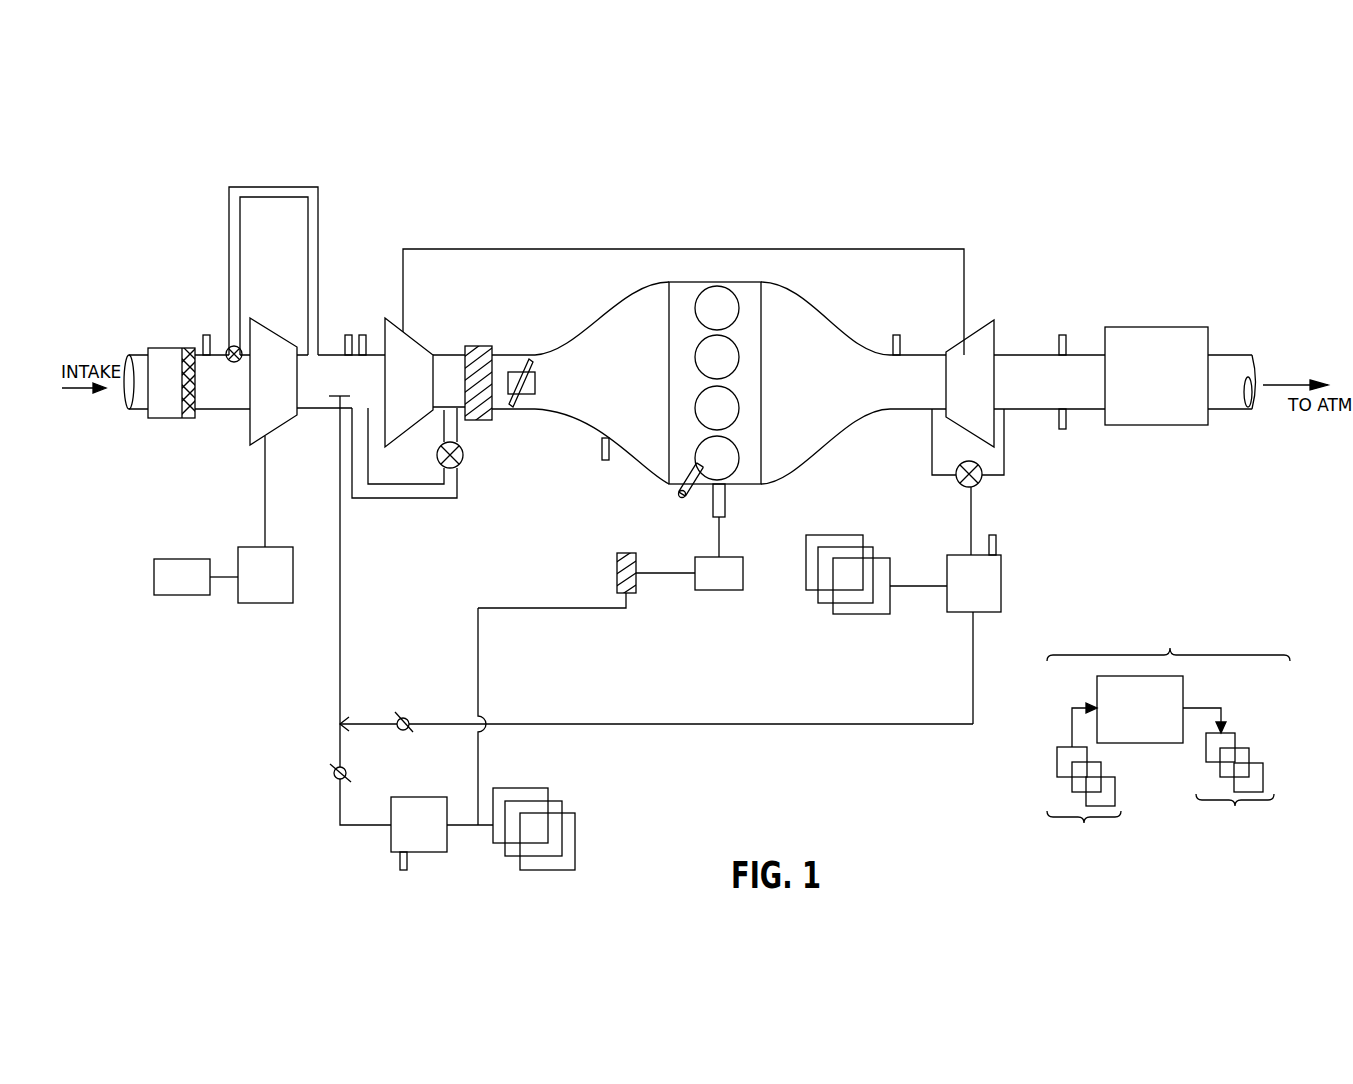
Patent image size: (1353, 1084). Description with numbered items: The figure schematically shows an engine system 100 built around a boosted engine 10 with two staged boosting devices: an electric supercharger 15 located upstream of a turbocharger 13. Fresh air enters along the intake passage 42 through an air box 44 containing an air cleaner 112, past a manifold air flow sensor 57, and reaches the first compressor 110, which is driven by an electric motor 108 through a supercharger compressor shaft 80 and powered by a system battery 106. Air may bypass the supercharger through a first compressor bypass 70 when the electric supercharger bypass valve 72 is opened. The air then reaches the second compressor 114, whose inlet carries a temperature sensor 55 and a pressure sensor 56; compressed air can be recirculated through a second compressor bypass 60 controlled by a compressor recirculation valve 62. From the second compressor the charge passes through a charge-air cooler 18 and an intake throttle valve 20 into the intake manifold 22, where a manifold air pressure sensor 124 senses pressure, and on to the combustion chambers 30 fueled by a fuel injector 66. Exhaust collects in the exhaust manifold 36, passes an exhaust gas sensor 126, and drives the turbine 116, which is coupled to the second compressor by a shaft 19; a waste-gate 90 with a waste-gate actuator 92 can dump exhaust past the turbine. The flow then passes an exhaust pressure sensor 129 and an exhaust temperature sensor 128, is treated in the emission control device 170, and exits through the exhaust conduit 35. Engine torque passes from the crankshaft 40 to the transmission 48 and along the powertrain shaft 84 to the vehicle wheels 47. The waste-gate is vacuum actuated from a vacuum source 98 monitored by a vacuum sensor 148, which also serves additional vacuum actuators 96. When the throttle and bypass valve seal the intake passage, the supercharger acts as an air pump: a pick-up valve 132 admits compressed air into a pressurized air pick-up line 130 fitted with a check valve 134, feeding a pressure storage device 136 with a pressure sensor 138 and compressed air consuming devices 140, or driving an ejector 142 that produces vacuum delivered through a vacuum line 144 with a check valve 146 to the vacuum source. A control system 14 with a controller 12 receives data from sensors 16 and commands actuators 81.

The engine system 100 is at (1236, 129).
The engine 10 is at (763, 366).
The controller 12 is at (1149, 711).
The turbocharger 13 is at (462, 236).
The control system 14 is at (1168, 635).
The electric supercharger 15 is at (183, 510).
The sensors 16 is at (1084, 807).
The charge-air cooler 18 is at (485, 346).
The shaft 19 is at (867, 250).
The intake throttle valve 20 is at (535, 393).
The intake manifold 22 is at (602, 383).
The combustion chambers 30 is at (739, 302).
The exhaust conduit 35 is at (1232, 355).
The exhaust manifold 36 is at (853, 383).
The crankshaft 40 is at (726, 512).
The intake passage 42 is at (137, 412).
The air box 44 is at (160, 419).
The vehicle wheels 47 is at (617, 563).
The transmission 48 is at (719, 573).
The temperature sensor 55 is at (349, 335).
The pressure sensor 56 is at (362, 335).
The manifold air flow sensor 57 is at (206, 336).
The second compressor bypass 60 is at (418, 484).
The compressor recirculation valve 62 is at (463, 458).
The fuel injector 66 is at (683, 495).
The first compressor bypass 70 is at (229, 230).
The electric supercharger bypass valve 72 is at (231, 346).
The supercharger compressor shaft 80 is at (265, 477).
The actuators 81 is at (1235, 793).
The powertrain shaft 84 is at (648, 575).
The waste-gate 90 is at (932, 464).
The waste-gate actuator 92 is at (965, 487).
The vacuum actuators 96 is at (876, 574).
The vacuum source 98 is at (974, 639).
The system battery 106 is at (196, 577).
The electric motor 108 is at (265, 575).
The first compressor 110 is at (273, 381).
The air cleaner 112 is at (190, 347).
The second compressor 114 is at (409, 382).
The turbine 116 is at (970, 383).
The manifold air pressure sensor 124 is at (602, 444).
The exhaust gas sensor 126 is at (897, 335).
The exhaust temperature sensor 128 is at (1062, 429).
The exhaust pressure sensor 129 is at (1062, 335).
The pressurized air pick-up line 130 is at (340, 515).
The pick-up valve 132 is at (330, 397).
The check valve 134 is at (329, 773).
The pressure storage device 136 is at (442, 824).
The pressure sensor 138 is at (403, 871).
The compressed air consuming devices 140 is at (534, 829).
The ejector 142 is at (334, 719).
The vacuum line 144 is at (364, 728).
The check valve 146 is at (410, 729).
The vacuum sensor 148 is at (993, 535).
The emission control device 170 is at (1147, 327).